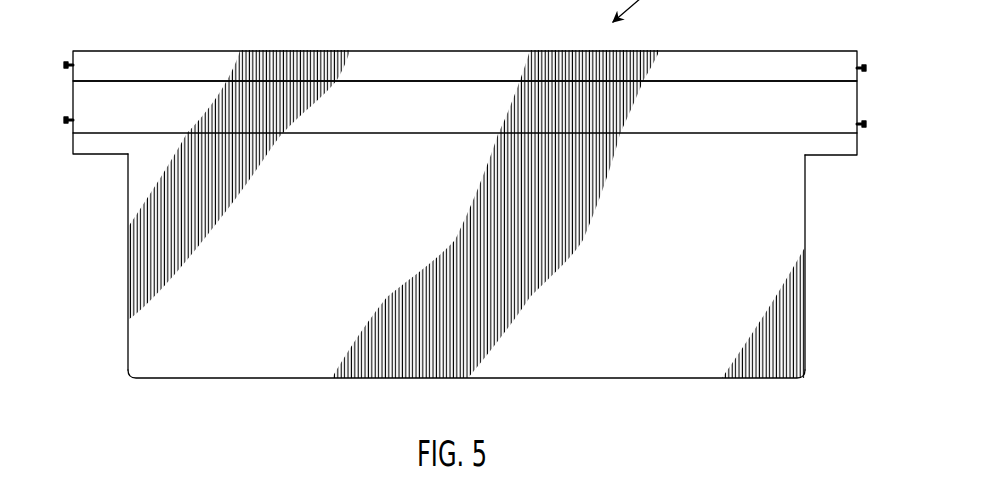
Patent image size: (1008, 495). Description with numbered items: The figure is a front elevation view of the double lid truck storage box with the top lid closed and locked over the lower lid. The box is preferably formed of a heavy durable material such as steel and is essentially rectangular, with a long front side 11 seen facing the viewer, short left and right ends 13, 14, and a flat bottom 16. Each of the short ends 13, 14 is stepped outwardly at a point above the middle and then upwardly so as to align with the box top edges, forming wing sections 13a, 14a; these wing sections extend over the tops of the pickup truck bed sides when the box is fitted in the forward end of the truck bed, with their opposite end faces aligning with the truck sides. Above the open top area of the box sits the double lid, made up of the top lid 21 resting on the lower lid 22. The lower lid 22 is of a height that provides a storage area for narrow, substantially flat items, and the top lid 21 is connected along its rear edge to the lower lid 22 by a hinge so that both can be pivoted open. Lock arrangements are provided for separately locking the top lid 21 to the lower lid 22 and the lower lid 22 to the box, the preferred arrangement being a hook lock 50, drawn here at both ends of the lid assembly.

The front side 11 is at (374, 237).
The left end 13 is at (128, 235).
The wing section 13a is at (114, 182).
The right end 14 is at (805, 256).
The wing section 14a is at (818, 182).
The bottom 16 is at (478, 380).
The top lid 21 is at (458, 70).
The lower lid 22 is at (384, 100).
The hook lock 50 is at (56, 106).